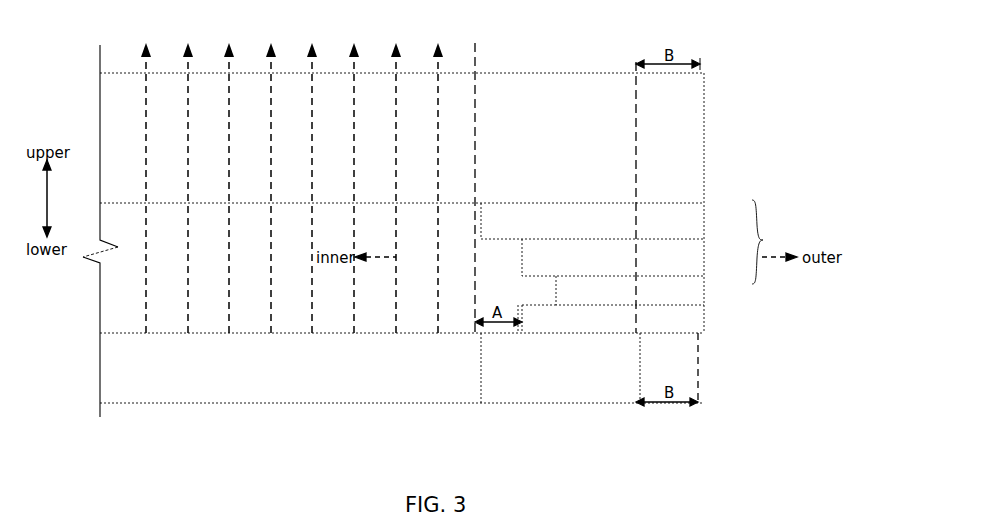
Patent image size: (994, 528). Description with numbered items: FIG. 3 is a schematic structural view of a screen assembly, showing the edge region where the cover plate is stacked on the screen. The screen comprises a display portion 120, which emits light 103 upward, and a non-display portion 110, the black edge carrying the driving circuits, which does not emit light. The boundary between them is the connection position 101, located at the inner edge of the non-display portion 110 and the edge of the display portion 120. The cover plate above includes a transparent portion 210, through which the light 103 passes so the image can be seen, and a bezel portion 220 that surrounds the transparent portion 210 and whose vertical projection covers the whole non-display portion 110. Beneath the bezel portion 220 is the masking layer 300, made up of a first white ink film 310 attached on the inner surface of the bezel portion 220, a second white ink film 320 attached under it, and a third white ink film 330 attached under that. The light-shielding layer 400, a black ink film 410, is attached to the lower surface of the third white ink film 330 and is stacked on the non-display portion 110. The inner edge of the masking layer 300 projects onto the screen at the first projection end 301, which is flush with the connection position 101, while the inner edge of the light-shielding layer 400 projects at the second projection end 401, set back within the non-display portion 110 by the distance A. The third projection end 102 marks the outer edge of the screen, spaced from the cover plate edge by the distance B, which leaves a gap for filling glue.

The light 103 is at (229, 52).
The transparent portion 210 is at (120, 128).
The bezel portion 220 is at (505, 76).
The third projection end 102 is at (636, 70).
The first white ink film 310 is at (680, 225).
The second white ink film 320 is at (682, 246).
The third white ink film 330 is at (682, 278).
The masking layer 300 is at (773, 242).
The black ink film 410 is at (680, 317).
The light-shielding layer 400 is at (697, 331).
The first projection end 301 is at (475, 331).
The connection position 101 is at (475, 360).
The second projection end 401 is at (518, 333).
The non-display portion 110 is at (581, 360).
The display portion 120 is at (201, 371).